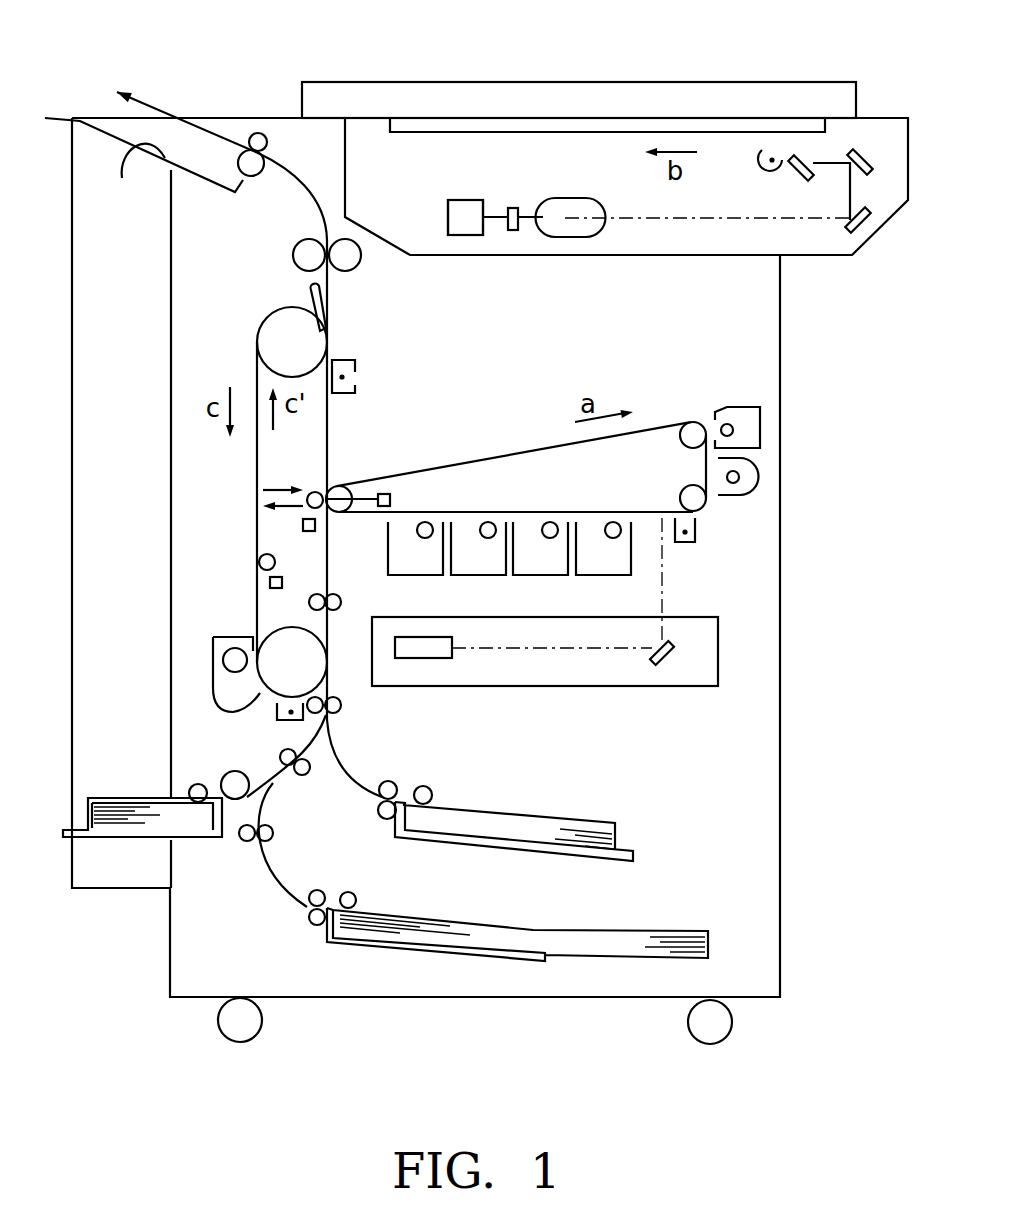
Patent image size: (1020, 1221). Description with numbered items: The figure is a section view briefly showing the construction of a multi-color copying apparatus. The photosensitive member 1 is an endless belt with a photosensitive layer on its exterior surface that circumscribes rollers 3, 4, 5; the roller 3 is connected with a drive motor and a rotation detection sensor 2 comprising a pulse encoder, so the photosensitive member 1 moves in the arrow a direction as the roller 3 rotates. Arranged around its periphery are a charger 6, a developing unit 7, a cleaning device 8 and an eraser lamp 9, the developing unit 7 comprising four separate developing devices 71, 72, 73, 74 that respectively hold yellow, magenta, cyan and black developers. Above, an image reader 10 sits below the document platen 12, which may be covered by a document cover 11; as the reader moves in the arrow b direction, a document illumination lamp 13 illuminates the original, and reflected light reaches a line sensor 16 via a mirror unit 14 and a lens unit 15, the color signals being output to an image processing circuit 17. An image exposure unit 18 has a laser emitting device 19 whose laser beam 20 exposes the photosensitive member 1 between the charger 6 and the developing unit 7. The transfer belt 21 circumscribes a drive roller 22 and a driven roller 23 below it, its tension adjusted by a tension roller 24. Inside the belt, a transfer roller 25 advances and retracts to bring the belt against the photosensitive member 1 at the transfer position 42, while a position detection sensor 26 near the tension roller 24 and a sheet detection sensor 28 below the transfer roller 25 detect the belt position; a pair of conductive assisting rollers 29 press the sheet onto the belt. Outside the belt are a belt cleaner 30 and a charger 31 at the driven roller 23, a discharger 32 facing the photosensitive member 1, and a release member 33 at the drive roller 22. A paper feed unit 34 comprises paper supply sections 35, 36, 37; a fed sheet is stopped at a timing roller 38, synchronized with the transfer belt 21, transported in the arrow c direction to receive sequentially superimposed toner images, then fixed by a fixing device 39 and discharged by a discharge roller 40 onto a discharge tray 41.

The photosensitive member 1 is at (527, 447).
The rotation detection sensor 2 is at (393, 500).
The roller 3 is at (340, 490).
The roller 4 is at (690, 498).
The roller 5 is at (697, 427).
The charger 6 is at (688, 543).
The developing unit 7 is at (640, 564).
The cleaning device 8 is at (738, 408).
The eraser lamp 9 is at (752, 473).
The image reader 10 is at (437, 243).
The document cover 11 is at (673, 92).
The document platen 12 is at (543, 118).
The document illumination lamp 13 is at (762, 147).
The mirror unit 14 is at (848, 232).
The lens unit 15 is at (577, 237).
The line sensor 16 is at (517, 230).
The image processing circuit 17 is at (473, 220).
The image exposure unit 18 is at (660, 664).
The laser emitting device 19 is at (433, 658).
The laser beam 20 is at (590, 686).
The transfer belt 21 is at (257, 373).
The drive roller 22 is at (282, 322).
The driven roller 23 is at (278, 640).
The tension roller 24 is at (257, 557).
The transfer roller 25 is at (317, 493).
The position detection sensor 26 is at (268, 583).
The sheet detection sensor 28 is at (303, 525).
The assisting rollers 29 is at (338, 600).
The belt cleaner 30 is at (213, 655).
The charger 31 is at (277, 716).
The discharger 32 is at (355, 378).
The release member 33 is at (317, 292).
The paper feed unit 34 is at (362, 960).
The paper supply section 35 is at (142, 838).
The paper supply section 36 is at (443, 933).
The paper supply section 37 is at (557, 828).
The timing roller 38 is at (340, 705).
The fixing device 39 is at (347, 253).
The discharge roller 40 is at (258, 133).
The discharge tray 41 is at (130, 179).
The transfer position 42 is at (328, 487).
The developing device 71 is at (610, 560).
The developing device 72 is at (548, 560).
The developing device 73 is at (486, 560).
The developing device 74 is at (422, 560).